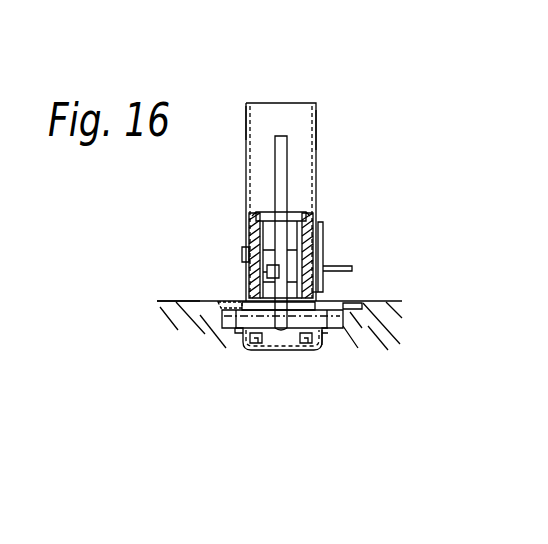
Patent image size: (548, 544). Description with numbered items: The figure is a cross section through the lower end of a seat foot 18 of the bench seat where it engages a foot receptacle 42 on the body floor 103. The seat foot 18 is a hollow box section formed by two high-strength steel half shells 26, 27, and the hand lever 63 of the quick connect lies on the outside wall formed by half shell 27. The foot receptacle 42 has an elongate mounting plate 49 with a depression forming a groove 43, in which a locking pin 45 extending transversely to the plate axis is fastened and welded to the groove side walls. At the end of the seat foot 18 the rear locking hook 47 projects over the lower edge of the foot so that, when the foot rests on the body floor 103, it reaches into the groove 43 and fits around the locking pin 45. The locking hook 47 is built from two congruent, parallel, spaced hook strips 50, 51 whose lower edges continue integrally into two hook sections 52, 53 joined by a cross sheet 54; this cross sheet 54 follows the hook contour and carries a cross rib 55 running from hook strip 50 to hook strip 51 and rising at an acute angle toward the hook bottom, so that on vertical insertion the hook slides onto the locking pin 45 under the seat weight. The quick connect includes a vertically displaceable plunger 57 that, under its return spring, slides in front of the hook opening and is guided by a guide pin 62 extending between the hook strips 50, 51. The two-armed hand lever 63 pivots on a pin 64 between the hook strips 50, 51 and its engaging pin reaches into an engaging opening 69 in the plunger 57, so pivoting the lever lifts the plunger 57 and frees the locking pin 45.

The seat foot 18 is at (286, 100).
The half shell 26 is at (246, 118).
The half shell 27 is at (318, 132).
The plunger 57 is at (278, 156).
The hook strip 51 is at (312, 214).
The hook strip 50 is at (252, 222).
The pin 64 is at (243, 252).
The guide pin 62 is at (256, 288).
The engaging opening 69 is at (320, 230).
The hand lever 63 is at (352, 266).
The cross rib 55 is at (317, 295).
The mounting plate 49 is at (384, 301).
The body floor 103 is at (162, 300).
The locking hook 47 is at (224, 312).
The locking pin 45 is at (236, 308).
The groove 43 is at (283, 343).
The hook section 52 is at (253, 350).
The hook section 53 is at (318, 340).
The cross sheet 54 is at (325, 337).
The foot receptacle 42 is at (356, 314).